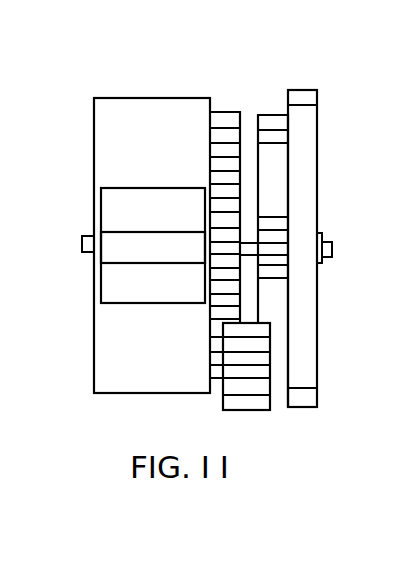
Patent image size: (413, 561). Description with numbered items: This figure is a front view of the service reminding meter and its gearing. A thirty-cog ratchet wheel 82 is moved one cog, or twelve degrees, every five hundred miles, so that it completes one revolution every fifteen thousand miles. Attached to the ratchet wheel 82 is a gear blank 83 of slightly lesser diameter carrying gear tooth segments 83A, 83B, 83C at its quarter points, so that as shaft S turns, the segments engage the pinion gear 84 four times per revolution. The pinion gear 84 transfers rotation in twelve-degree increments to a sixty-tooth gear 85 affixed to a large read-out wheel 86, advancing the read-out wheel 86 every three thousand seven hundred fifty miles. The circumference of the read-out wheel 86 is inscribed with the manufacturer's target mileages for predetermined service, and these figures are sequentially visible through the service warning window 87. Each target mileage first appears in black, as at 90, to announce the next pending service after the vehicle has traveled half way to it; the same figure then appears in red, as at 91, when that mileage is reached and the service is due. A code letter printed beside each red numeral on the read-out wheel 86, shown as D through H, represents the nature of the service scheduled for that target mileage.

The ratchet wheel 82 is at (307, 84).
The gear blank 83 is at (317, 227).
The gear tooth segment 83A is at (276, 141).
The gear tooth segment 83B is at (276, 245).
The gear tooth segment 83C is at (273, 370).
The pinion gear 84 is at (239, 414).
The sixty-tooth gear 85 is at (232, 104).
The read-out wheel 86 is at (192, 90).
The service warning window 87 is at (108, 270).
The black target mileage figure 90 is at (134, 112).
The red target mileage figure 91 is at (137, 128).
The shaft S is at (331, 242).